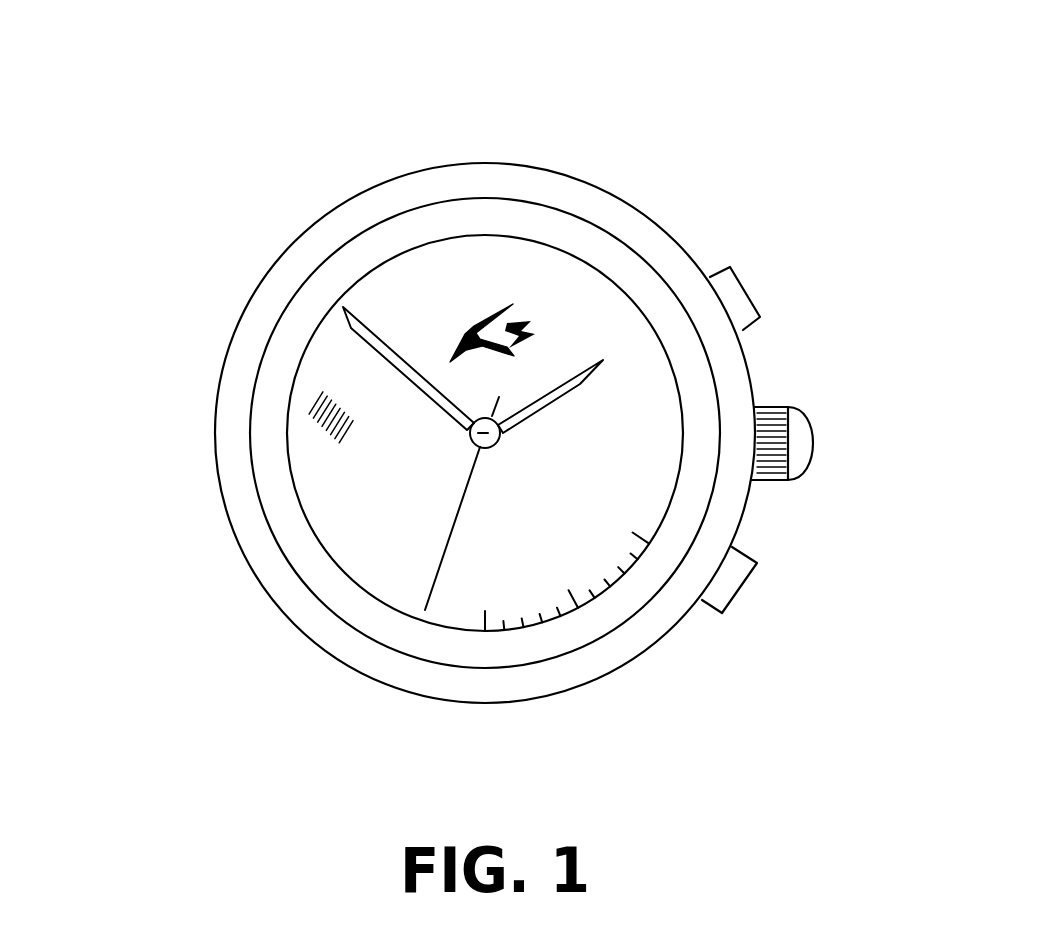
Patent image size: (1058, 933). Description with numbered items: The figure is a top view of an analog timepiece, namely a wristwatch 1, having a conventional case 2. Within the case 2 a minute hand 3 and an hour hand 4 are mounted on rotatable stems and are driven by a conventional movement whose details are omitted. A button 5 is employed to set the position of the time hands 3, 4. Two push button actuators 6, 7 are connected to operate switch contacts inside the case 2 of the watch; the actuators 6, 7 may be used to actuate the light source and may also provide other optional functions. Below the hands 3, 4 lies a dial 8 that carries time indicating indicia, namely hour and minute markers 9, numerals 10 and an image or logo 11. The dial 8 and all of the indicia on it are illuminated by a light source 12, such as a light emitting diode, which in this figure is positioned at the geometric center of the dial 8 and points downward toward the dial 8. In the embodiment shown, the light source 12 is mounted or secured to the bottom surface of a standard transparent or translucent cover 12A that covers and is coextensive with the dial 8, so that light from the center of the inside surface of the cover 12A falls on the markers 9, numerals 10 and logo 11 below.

The wristwatch 1 is at (688, 132).
The case 2 is at (487, 181).
The minute hand 3 is at (384, 347).
The hour hand 4 is at (576, 384).
The button 5 is at (807, 442).
The push button actuator 6 is at (742, 292).
The push button actuator 7 is at (735, 575).
The dial 8 is at (650, 383).
The hour and minute markers 9 is at (483, 623).
The numerals 10 is at (335, 522).
The image or logo 11 is at (455, 330).
The light source 12 is at (470, 425).
The cover 12A is at (318, 398).